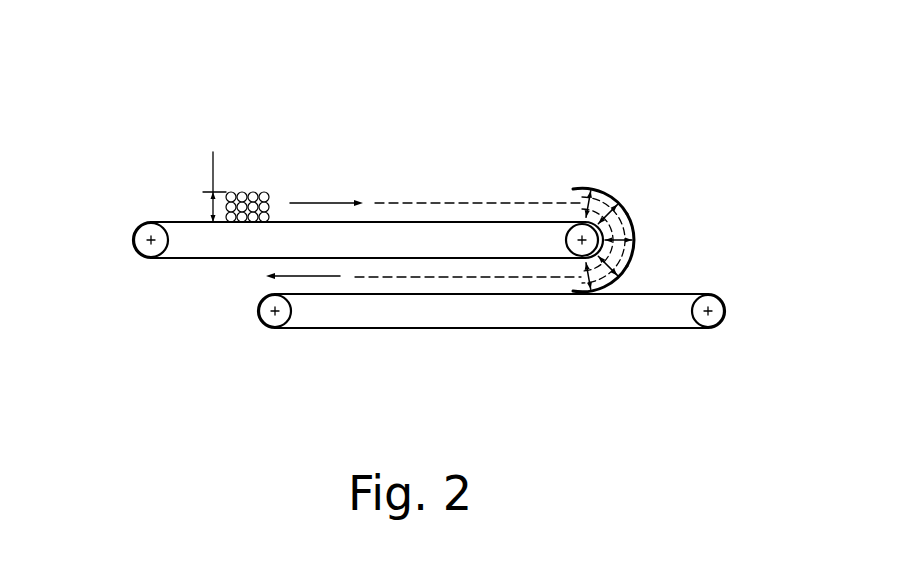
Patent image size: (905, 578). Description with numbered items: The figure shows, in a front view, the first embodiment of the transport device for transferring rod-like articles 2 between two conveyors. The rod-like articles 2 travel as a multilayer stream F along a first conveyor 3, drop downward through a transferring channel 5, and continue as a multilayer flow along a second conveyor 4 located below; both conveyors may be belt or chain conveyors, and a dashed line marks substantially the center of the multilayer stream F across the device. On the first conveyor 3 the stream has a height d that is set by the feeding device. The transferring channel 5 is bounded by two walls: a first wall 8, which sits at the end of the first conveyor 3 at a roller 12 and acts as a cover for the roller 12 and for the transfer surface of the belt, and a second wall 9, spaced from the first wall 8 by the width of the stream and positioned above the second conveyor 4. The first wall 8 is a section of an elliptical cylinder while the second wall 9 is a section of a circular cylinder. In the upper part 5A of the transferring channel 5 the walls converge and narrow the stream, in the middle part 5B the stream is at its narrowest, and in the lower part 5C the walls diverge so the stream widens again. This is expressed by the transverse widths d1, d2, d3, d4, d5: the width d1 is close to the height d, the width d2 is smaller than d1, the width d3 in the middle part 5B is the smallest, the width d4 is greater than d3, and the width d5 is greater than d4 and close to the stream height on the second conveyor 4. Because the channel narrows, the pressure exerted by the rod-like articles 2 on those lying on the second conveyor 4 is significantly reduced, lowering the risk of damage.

The rod-like articles 2 is at (263, 192).
The first conveyor 3 is at (170, 220).
The second conveyor 4 is at (673, 295).
The transferring channel 5 is at (653, 210).
The upper part of the transferring channel 5A is at (596, 189).
The middle part of the transferring channel 5B is at (622, 253).
The lower part of the transferring channel 5C is at (588, 291).
The first wall 8 is at (582, 221).
The second wall 9 is at (604, 202).
The roller 12 is at (571, 254).
The multilayer stream F is at (473, 202).
The height of the multilayer stream d is at (206, 185).
The width d1 of the transferring channel d1 is at (599, 198).
The width d2 of the transferring channel d2 is at (622, 200).
The width d3 of the transferring channel d3 is at (675, 240).
The width d4 of the transferring channel d4 is at (612, 268).
The width d5 of the transferring channel d5 is at (588, 292).